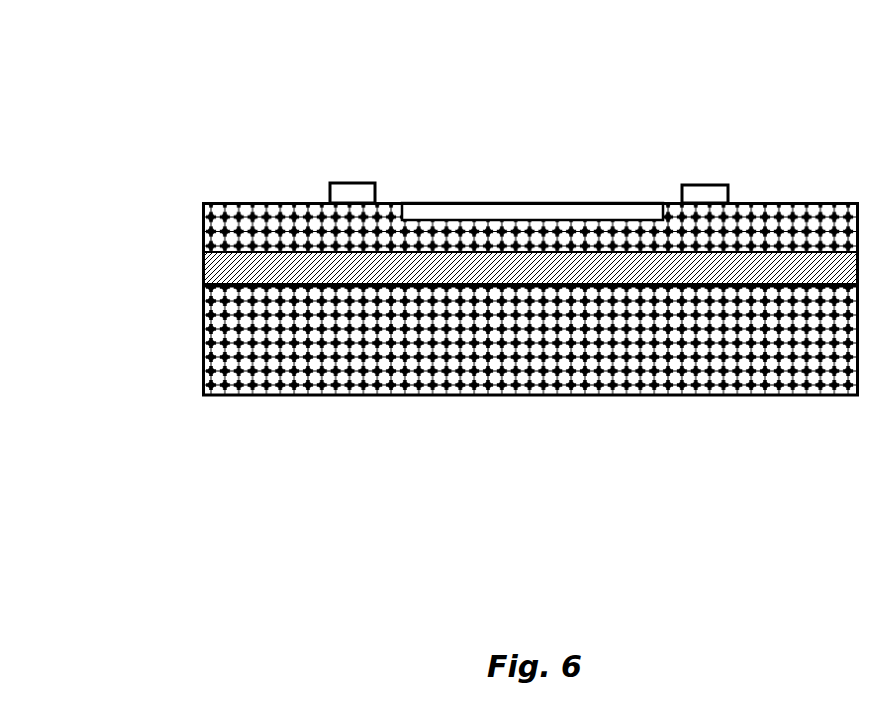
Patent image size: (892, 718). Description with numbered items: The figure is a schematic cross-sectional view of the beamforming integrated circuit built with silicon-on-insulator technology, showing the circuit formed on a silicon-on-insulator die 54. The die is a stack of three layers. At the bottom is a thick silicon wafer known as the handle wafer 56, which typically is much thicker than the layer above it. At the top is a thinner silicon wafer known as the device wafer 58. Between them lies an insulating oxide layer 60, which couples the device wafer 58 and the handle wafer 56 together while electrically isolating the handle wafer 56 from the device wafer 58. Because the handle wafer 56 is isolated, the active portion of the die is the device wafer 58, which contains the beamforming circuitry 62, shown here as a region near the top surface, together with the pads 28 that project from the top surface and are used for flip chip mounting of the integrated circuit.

The silicon-on-insulator die 54 is at (272, 108).
The pads 28 is at (347, 183).
The circuitry 62 is at (538, 215).
The device wafer 58 is at (215, 245).
The insulating oxide layer 60 is at (213, 273).
The handle wafer 56 is at (215, 334).